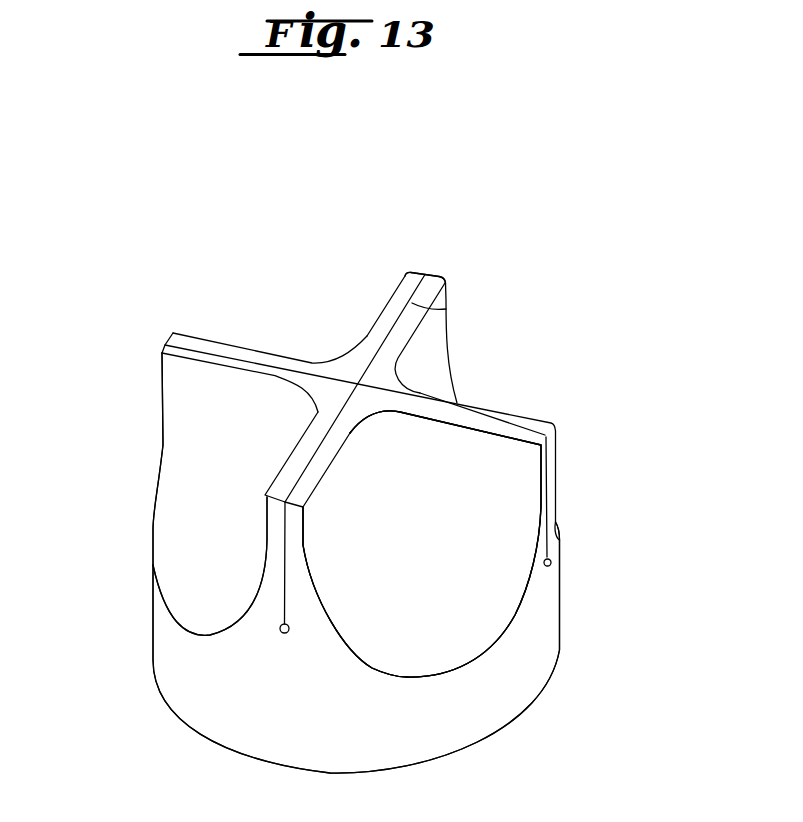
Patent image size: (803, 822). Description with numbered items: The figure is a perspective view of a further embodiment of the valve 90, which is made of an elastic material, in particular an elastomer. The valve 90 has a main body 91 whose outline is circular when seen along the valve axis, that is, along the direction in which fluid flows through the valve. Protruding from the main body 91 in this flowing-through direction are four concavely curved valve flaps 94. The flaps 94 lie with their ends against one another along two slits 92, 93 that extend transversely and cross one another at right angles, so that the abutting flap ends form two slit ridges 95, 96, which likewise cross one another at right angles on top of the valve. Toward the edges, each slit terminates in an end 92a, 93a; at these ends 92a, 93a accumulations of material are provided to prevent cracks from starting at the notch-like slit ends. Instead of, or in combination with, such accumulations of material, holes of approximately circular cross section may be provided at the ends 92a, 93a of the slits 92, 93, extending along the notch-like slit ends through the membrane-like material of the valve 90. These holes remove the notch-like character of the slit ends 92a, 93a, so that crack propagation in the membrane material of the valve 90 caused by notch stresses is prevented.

The valve 90 is at (118, 466).
The main body 91 is at (538, 663).
The slit 92 is at (443, 307).
The end of the slit 92a is at (278, 628).
The slit 93 is at (223, 354).
The end of the slit 93a is at (552, 561).
The valve flap 94 is at (326, 332).
The slit ridge 95 is at (451, 250).
The slit ridge 96 is at (583, 445).